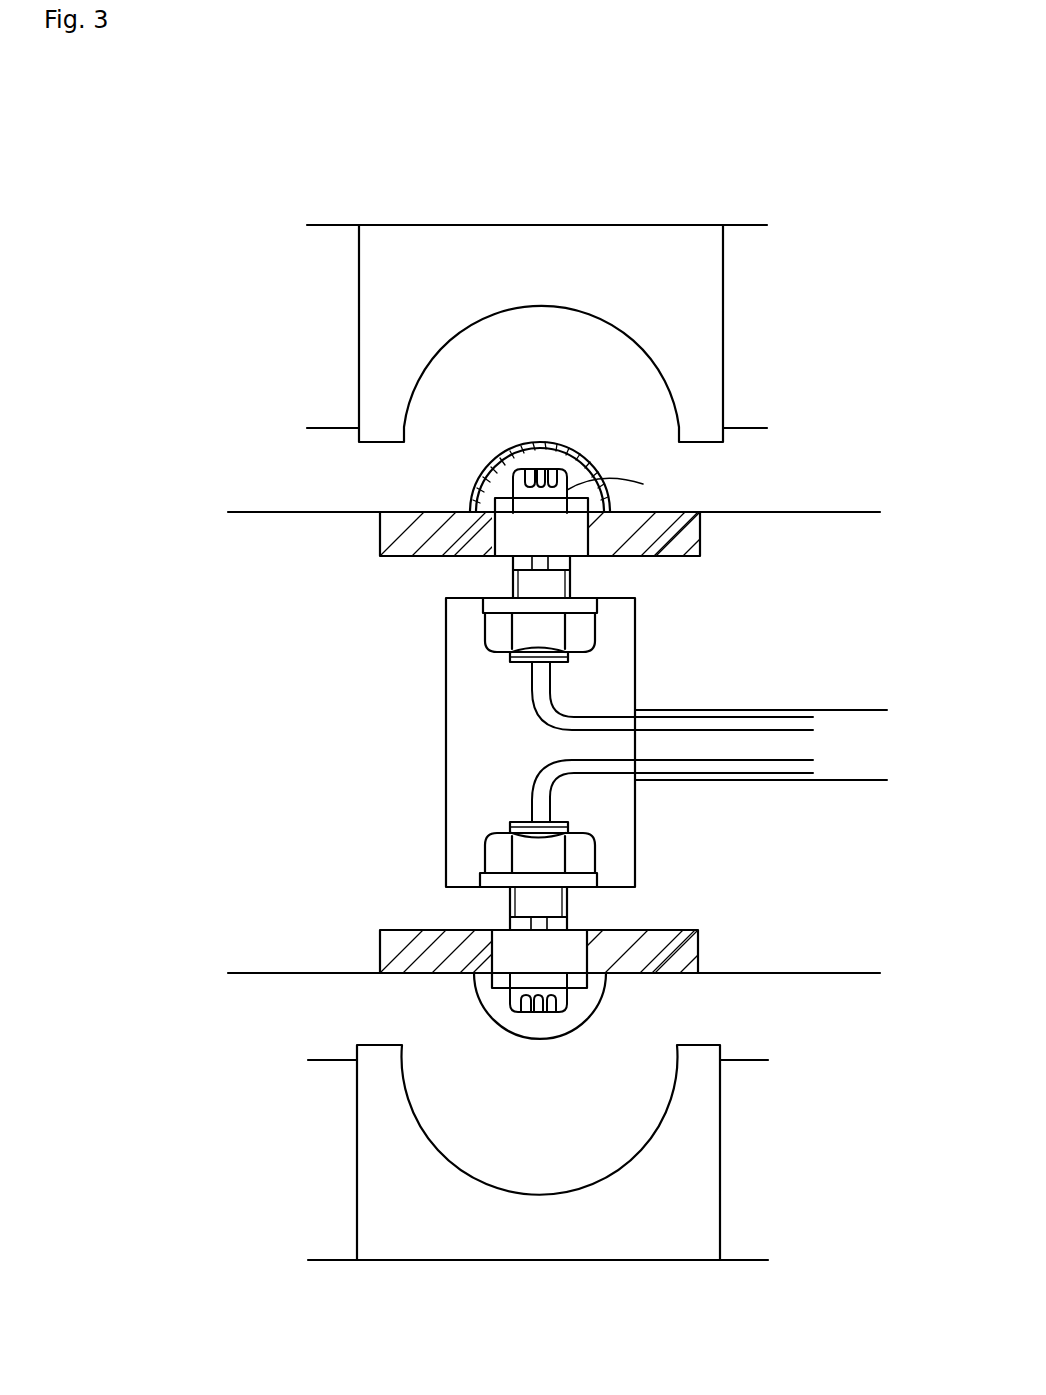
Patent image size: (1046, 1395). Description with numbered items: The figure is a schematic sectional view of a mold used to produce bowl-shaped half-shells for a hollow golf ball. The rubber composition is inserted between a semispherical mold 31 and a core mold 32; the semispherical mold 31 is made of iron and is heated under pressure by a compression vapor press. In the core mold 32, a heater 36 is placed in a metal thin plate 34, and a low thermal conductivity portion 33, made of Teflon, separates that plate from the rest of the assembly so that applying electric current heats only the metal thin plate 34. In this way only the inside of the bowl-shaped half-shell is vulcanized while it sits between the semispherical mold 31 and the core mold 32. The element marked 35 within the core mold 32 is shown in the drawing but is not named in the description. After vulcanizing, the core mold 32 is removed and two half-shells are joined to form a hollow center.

The semispherical mold 31 is at (695, 246).
The core mold 32 is at (255, 498).
The low thermal conductivity portion 33 is at (684, 546).
The metal thin plate 34 is at (511, 453).
The sensing element 35 is at (563, 459).
The heater 36 is at (623, 482).